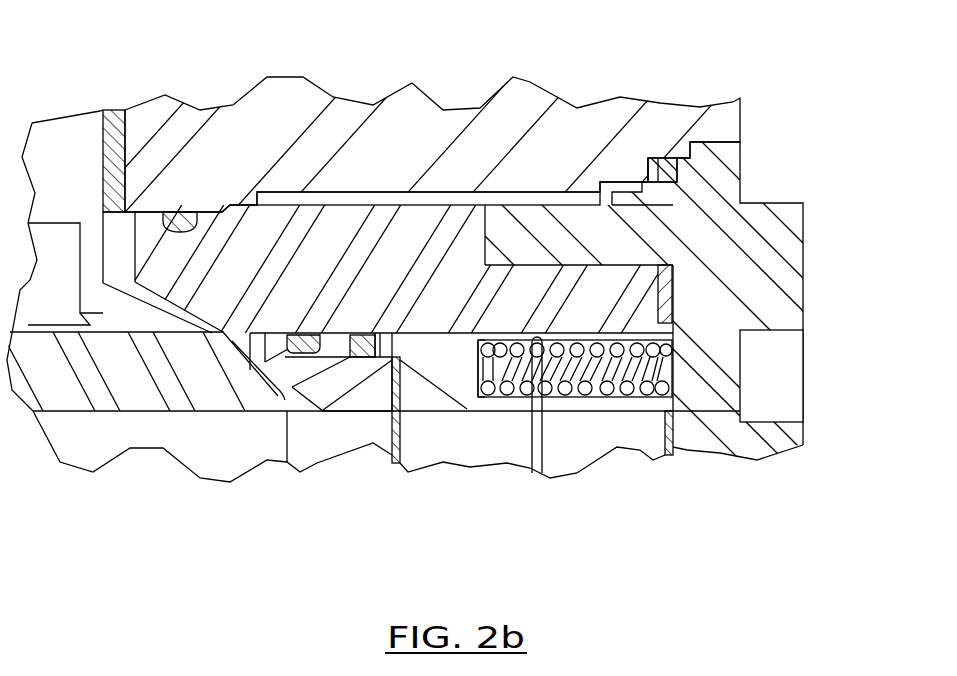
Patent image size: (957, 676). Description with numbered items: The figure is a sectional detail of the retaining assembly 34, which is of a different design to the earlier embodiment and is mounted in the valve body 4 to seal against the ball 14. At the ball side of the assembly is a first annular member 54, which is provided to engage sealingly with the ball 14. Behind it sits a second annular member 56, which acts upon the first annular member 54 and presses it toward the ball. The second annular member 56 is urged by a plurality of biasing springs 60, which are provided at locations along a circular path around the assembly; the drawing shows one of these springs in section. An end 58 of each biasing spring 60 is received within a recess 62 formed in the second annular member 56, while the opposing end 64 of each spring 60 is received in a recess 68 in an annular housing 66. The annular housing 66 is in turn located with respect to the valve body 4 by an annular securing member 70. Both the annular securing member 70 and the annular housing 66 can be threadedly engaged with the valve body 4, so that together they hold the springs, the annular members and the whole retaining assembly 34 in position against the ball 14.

The valve body 4 is at (625, 141).
The ball 14 is at (190, 382).
The retaining assembly 34 is at (748, 243).
The first annular member 54 is at (286, 392).
The second annular member 56 is at (437, 378).
The end of biasing spring 58 is at (535, 400).
The biasing spring 60 is at (660, 268).
The recess 62 is at (480, 397).
The opposing end of spring 64 is at (673, 390).
The annular housing 66 is at (431, 258).
The recess 68 is at (673, 281).
The annular securing member 70 is at (783, 317).